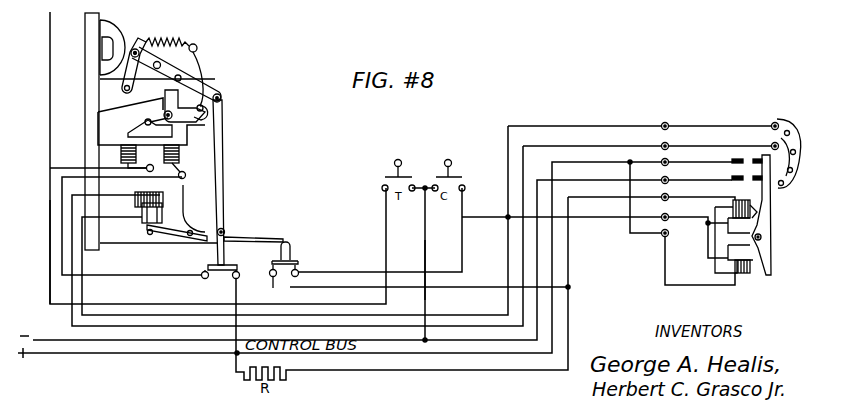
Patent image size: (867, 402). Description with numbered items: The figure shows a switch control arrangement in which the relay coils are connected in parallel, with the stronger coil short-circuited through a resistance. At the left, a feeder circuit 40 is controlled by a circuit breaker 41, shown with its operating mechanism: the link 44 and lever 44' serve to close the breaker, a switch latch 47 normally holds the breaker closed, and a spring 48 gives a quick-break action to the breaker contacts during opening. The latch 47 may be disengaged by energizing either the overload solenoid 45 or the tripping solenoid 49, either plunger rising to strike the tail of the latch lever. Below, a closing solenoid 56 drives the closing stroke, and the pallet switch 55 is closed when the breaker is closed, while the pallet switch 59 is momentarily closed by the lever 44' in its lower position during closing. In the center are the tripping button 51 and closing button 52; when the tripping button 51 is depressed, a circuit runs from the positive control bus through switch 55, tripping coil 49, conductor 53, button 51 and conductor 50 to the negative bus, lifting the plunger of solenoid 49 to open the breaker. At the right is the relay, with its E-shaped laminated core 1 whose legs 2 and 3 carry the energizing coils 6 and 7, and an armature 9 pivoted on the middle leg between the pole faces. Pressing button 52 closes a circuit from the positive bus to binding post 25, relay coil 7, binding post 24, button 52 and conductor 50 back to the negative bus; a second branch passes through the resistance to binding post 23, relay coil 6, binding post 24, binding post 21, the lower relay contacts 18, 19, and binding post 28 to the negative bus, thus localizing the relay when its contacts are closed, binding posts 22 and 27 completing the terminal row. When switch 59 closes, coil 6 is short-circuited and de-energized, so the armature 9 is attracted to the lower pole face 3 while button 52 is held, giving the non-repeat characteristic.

The laminated magnetic core 1 is at (734, 240).
The upper leg 2 is at (756, 204).
The lower leg 3 is at (753, 268).
The relay coil 6 is at (741, 201).
The relay coil 7 is at (743, 279).
The armature 9 is at (767, 235).
The relay contact 18 is at (783, 178).
The relay contact 19 is at (732, 178).
The binding post 21 is at (708, 120).
The binding post 22 is at (708, 140).
The binding post 23 is at (656, 191).
The binding post 24 is at (656, 210).
The binding post 25 is at (656, 227).
The binding post 27 is at (656, 157).
The binding post 28 is at (656, 174).
The feeder circuit 40 is at (73, 10).
The circuit breaker 41 is at (120, 31).
The link 44 is at (232, 179).
The lever 44' is at (253, 226).
The overload solenoid 45 is at (121, 135).
The switch latch 47 is at (185, 116).
The spring 48 is at (171, 37).
The tripping solenoid 49 is at (153, 163).
The conductor 50 is at (427, 262).
The tripping button 51 is at (398, 189).
The closing button 52 is at (448, 189).
The conductor 53 is at (50, 275).
The pallet switch 55 is at (221, 280).
The closing solenoid 56 is at (165, 213).
The pallet switch 59 is at (284, 265).